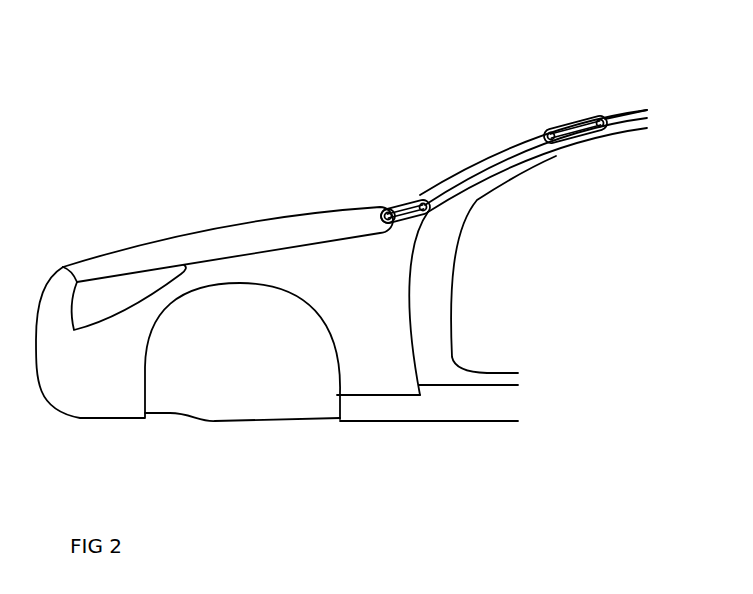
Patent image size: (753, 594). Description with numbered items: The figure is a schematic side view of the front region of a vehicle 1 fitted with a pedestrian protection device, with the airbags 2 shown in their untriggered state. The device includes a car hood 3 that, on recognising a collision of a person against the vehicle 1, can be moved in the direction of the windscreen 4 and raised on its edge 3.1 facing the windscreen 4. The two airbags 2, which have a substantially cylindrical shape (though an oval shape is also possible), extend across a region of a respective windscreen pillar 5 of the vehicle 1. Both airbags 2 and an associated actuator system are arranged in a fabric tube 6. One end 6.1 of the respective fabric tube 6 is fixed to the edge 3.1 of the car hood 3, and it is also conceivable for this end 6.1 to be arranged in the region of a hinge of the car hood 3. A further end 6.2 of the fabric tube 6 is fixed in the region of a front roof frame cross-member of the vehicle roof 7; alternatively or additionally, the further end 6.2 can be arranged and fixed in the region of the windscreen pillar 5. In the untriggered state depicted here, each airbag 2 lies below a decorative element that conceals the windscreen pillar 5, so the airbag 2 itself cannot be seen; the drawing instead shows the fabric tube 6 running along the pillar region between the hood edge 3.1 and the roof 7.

The vehicle 1 is at (228, 113).
The airbag 2 is at (537, 193).
The car hood 3 is at (95, 257).
The edge 3.1 is at (379, 205).
The windscreen 4 is at (491, 157).
The windscreen pillar 5 is at (540, 158).
The fabric tube 6 is at (471, 190).
The end of the fabric tube 6.1 is at (405, 220).
The further end of the fabric tube 6.2 is at (599, 114).
The vehicle roof 7 is at (648, 109).